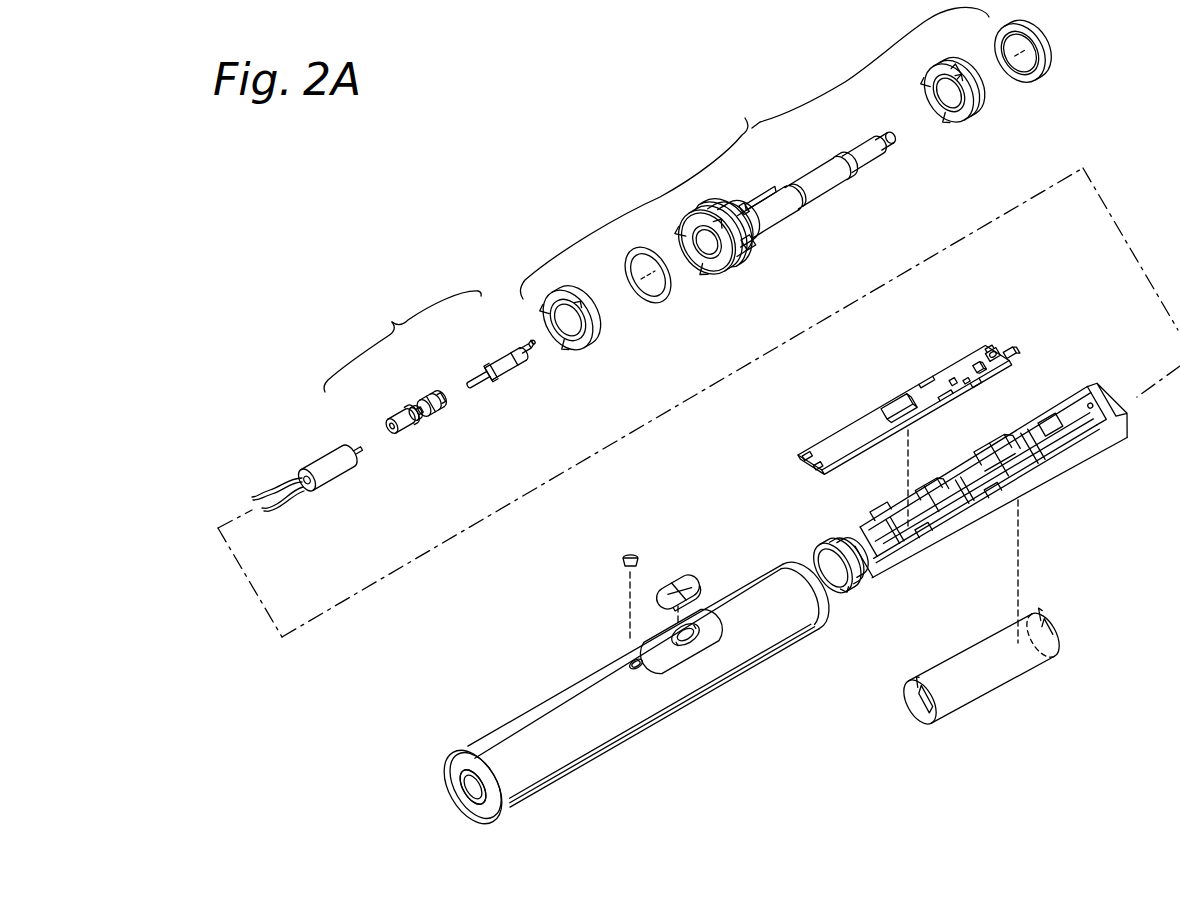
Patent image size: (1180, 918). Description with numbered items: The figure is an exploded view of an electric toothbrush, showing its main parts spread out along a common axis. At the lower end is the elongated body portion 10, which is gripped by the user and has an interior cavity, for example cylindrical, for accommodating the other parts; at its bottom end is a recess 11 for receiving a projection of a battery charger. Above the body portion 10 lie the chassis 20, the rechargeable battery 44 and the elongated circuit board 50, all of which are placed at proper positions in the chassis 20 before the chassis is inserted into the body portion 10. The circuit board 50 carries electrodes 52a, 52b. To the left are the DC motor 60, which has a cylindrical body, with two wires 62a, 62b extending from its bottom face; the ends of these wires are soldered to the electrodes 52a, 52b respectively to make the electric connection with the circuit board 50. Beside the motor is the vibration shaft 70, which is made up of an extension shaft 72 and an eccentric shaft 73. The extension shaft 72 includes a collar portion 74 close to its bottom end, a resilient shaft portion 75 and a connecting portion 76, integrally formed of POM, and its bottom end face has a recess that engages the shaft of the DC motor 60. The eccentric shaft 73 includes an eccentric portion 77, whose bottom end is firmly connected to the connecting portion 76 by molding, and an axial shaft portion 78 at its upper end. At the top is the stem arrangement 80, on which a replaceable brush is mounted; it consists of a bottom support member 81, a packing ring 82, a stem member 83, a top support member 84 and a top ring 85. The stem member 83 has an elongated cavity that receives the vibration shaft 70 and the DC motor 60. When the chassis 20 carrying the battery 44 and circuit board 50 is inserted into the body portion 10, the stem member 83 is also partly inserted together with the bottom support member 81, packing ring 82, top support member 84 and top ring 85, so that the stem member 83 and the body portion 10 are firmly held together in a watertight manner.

The body portion 10 is at (640, 753).
The recess 11 is at (470, 788).
The chassis 20 is at (935, 567).
The rechargeable battery 44 is at (1000, 700).
The circuit board 50 is at (890, 388).
The electrode 52a is at (996, 345).
The electrode 52b is at (1012, 350).
The DC motor 60 is at (333, 473).
The wire 62a is at (286, 478).
The wire 62b is at (287, 503).
The vibration shaft 70 is at (402, 341).
The extension shaft 72 is at (420, 402).
The eccentric shaft 73 is at (513, 364).
The collar portion 74 is at (400, 414).
The resilient shaft portion 75 is at (410, 410).
The connecting portion 76 is at (430, 400).
The eccentric portion 77 is at (500, 364).
The axial shaft portion 78 is at (518, 344).
The stem arrangement 80 is at (754, 153).
The bottom support member 81 is at (585, 346).
The packing ring 82 is at (663, 304).
The stem member 83 is at (818, 186).
The top support member 84 is at (968, 121).
The top ring 85 is at (1038, 78).